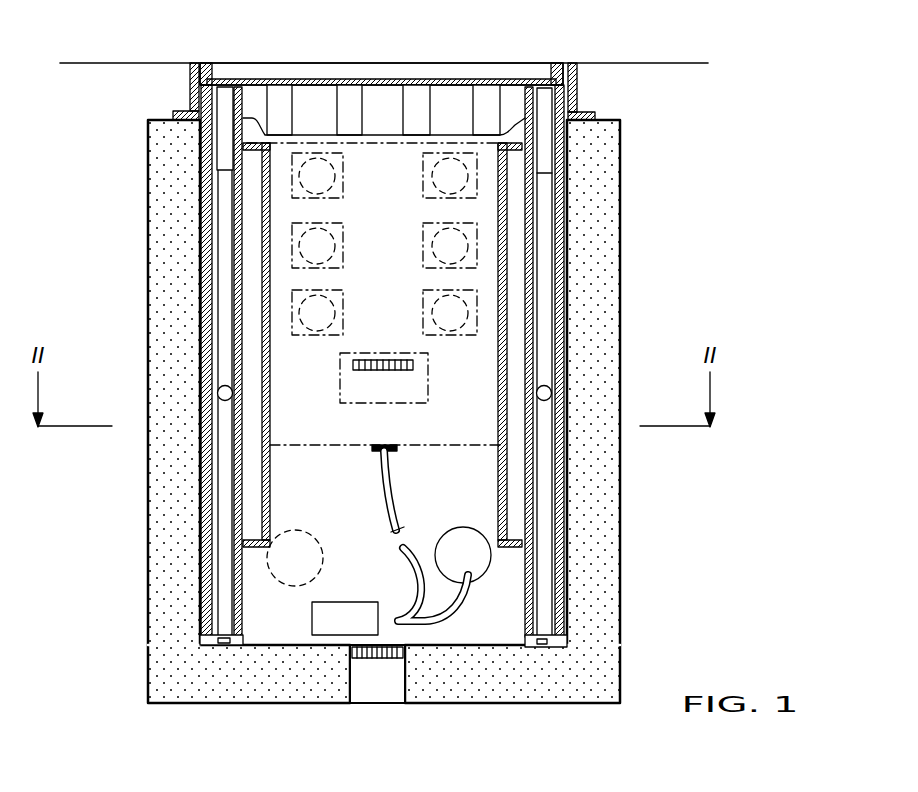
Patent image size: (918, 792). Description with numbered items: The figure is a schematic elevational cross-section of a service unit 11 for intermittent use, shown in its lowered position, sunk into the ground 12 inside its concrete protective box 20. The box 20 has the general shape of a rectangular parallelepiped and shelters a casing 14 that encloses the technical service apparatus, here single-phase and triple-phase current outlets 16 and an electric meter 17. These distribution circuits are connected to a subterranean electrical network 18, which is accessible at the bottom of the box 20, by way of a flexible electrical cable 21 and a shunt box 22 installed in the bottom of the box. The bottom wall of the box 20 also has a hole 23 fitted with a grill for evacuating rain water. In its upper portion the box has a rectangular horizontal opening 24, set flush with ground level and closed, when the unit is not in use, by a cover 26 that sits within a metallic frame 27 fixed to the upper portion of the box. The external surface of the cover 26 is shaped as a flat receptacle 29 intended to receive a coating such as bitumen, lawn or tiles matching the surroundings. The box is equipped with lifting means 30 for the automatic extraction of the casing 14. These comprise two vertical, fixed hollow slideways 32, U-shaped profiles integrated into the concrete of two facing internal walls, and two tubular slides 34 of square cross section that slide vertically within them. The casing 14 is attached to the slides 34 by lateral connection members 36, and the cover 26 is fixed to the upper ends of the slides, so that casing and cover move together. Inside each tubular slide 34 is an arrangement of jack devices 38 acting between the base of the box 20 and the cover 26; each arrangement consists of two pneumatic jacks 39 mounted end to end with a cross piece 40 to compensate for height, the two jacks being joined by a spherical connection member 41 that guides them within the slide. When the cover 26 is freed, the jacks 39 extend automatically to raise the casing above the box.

The service unit 11 is at (172, 613).
The ground 12 is at (708, 510).
The casing 14 is at (410, 449).
The current outlets 16 is at (346, 291).
The electric meter 17 is at (340, 401).
The subterranean electrical network 18 is at (437, 622).
The protective box 20 is at (597, 602).
The flexible electrical cable 21 is at (388, 505).
The shunt box 22 is at (345, 615).
The hole 23 is at (384, 685).
The horizontal opening 24 is at (318, 135).
The cover 26 is at (450, 100).
The metallic frame 27 is at (577, 85).
The flat receptacle 29 is at (545, 65).
The lifting means 30 is at (212, 275).
The hollow slideways 32 is at (208, 645).
The slides 34 is at (258, 608).
The lateral connection members 36 is at (268, 522).
The jack devices 38 is at (232, 432).
The jacks 39 is at (232, 215).
The cross piece 40 is at (222, 150).
The spherical connection member 41 is at (218, 393).